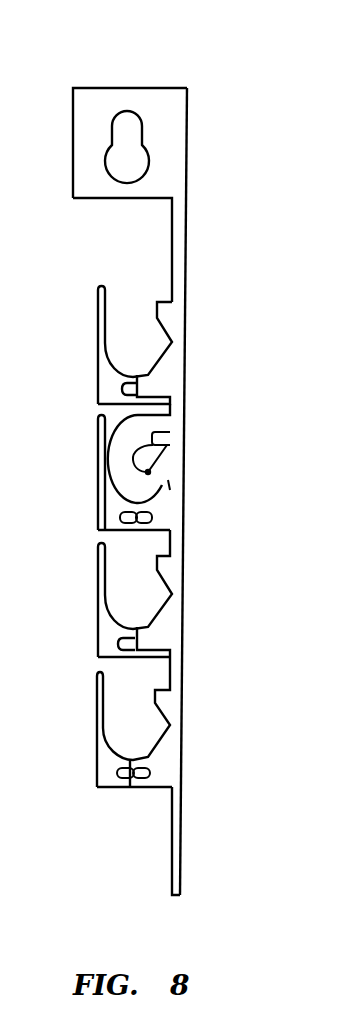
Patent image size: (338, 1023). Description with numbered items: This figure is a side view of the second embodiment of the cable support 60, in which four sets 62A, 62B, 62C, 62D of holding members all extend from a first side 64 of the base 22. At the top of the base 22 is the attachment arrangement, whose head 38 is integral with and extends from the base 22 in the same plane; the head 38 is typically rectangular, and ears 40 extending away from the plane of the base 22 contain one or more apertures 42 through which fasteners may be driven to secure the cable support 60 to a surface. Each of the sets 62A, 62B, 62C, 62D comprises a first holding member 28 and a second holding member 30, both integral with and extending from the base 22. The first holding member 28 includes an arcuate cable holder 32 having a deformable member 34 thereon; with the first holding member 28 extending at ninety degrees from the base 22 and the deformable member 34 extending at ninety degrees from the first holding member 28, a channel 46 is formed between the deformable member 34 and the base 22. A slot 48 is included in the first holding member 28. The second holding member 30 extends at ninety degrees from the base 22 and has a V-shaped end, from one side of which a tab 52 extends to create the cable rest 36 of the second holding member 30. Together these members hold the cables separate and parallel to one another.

The base 22 is at (180, 833).
The first holding member 28 is at (110, 790).
The second holding member 30 is at (167, 363).
The arcuate cable holder 32 is at (103, 602).
The deformable member 34 is at (107, 421).
The cable rest 36 is at (103, 442).
The head 38 is at (188, 153).
The ears 40 is at (179, 125).
The apertures 42 is at (128, 127).
The channel 46 is at (135, 302).
The slot 48 is at (130, 790).
The tab 52 is at (137, 644).
The cable support 60 is at (234, 518).
The set of holding members 62A is at (90, 286).
The set of holding members 62B is at (90, 413).
The set of holding members 62C is at (90, 543).
The set of holding members 62D is at (90, 673).
The first side 64 is at (163, 240).